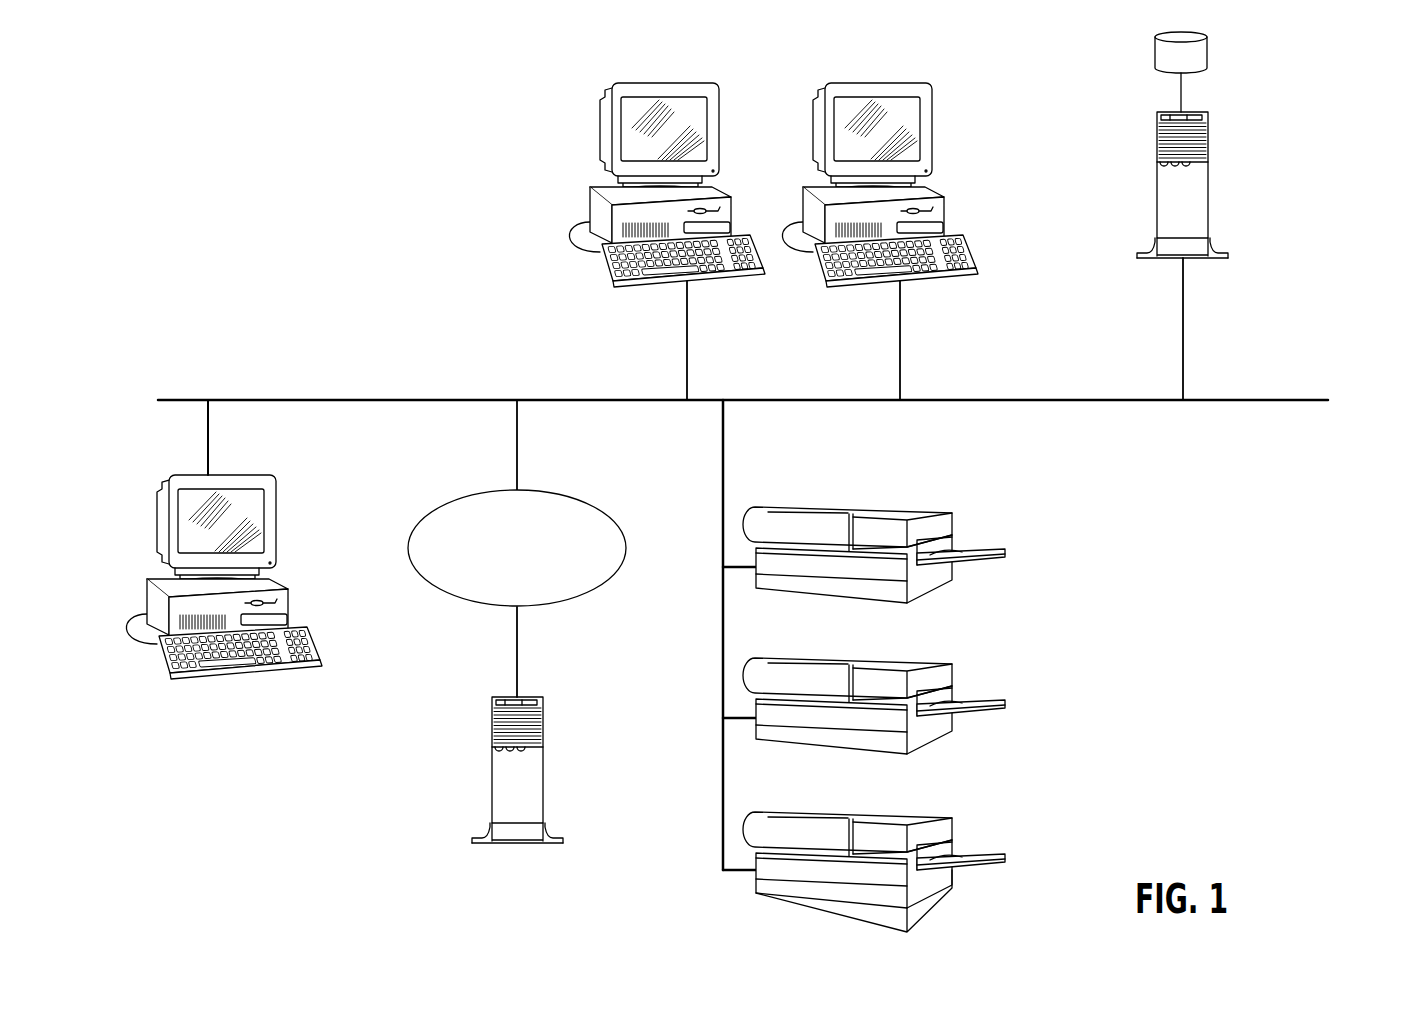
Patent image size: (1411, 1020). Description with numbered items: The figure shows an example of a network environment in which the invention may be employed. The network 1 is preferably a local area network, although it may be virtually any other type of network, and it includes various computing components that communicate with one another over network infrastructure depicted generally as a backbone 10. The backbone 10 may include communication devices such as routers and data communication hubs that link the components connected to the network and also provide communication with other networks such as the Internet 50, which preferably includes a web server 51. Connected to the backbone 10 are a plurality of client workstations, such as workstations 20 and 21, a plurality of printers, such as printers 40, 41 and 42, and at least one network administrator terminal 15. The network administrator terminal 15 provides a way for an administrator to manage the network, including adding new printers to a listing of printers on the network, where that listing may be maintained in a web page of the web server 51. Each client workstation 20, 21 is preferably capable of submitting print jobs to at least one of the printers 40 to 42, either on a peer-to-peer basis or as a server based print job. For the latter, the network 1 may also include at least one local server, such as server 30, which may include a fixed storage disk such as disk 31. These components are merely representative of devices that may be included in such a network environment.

The network 1 is at (1362, 112).
The backbone 10 is at (1270, 400).
The network administrator terminal 15 is at (247, 475).
The workstation 20 is at (683, 83).
The workstation 21 is at (896, 83).
The server 30 is at (1208, 186).
The disk 31 is at (1207, 35).
The printer 40 is at (921, 512).
The printer 41 is at (921, 663).
The printer 42 is at (921, 817).
The Internet 50 is at (556, 492).
The web server 51 is at (547, 771).